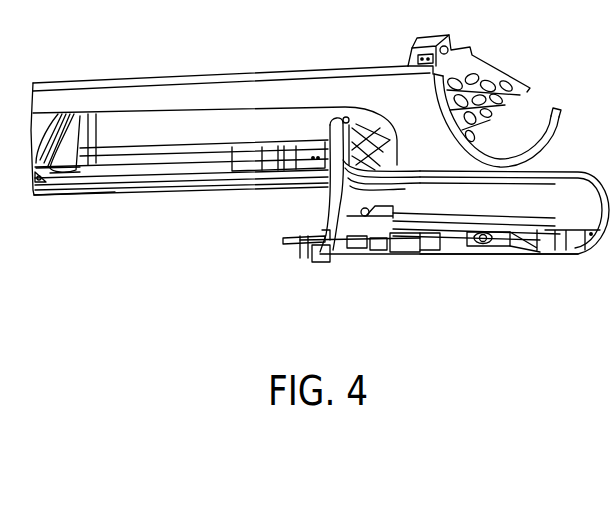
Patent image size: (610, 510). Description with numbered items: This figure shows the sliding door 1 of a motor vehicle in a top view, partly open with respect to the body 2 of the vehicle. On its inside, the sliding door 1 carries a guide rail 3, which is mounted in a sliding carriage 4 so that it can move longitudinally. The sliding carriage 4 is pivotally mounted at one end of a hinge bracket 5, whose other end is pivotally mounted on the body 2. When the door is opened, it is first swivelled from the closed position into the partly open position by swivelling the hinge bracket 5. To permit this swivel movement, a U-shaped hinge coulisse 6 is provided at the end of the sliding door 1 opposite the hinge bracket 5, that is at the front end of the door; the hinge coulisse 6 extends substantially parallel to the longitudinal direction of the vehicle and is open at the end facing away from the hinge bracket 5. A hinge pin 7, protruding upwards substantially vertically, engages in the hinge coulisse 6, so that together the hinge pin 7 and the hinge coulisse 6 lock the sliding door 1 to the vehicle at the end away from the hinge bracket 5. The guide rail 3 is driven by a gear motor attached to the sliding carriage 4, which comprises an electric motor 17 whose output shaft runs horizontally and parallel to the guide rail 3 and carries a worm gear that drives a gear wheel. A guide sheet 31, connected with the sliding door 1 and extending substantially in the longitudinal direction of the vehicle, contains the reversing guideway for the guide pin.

The sliding door 1 is at (464, 298).
The body 2 is at (144, 98).
The guide rail 3 is at (429, 270).
The sliding carriage 4 is at (353, 265).
The hinge bracket 5 is at (336, 181).
The U-shaped hinge coulisse 6 is at (299, 255).
The hinge pin 7 is at (66, 176).
The electric motor 17 is at (395, 252).
The guide sheet 31 is at (465, 236).